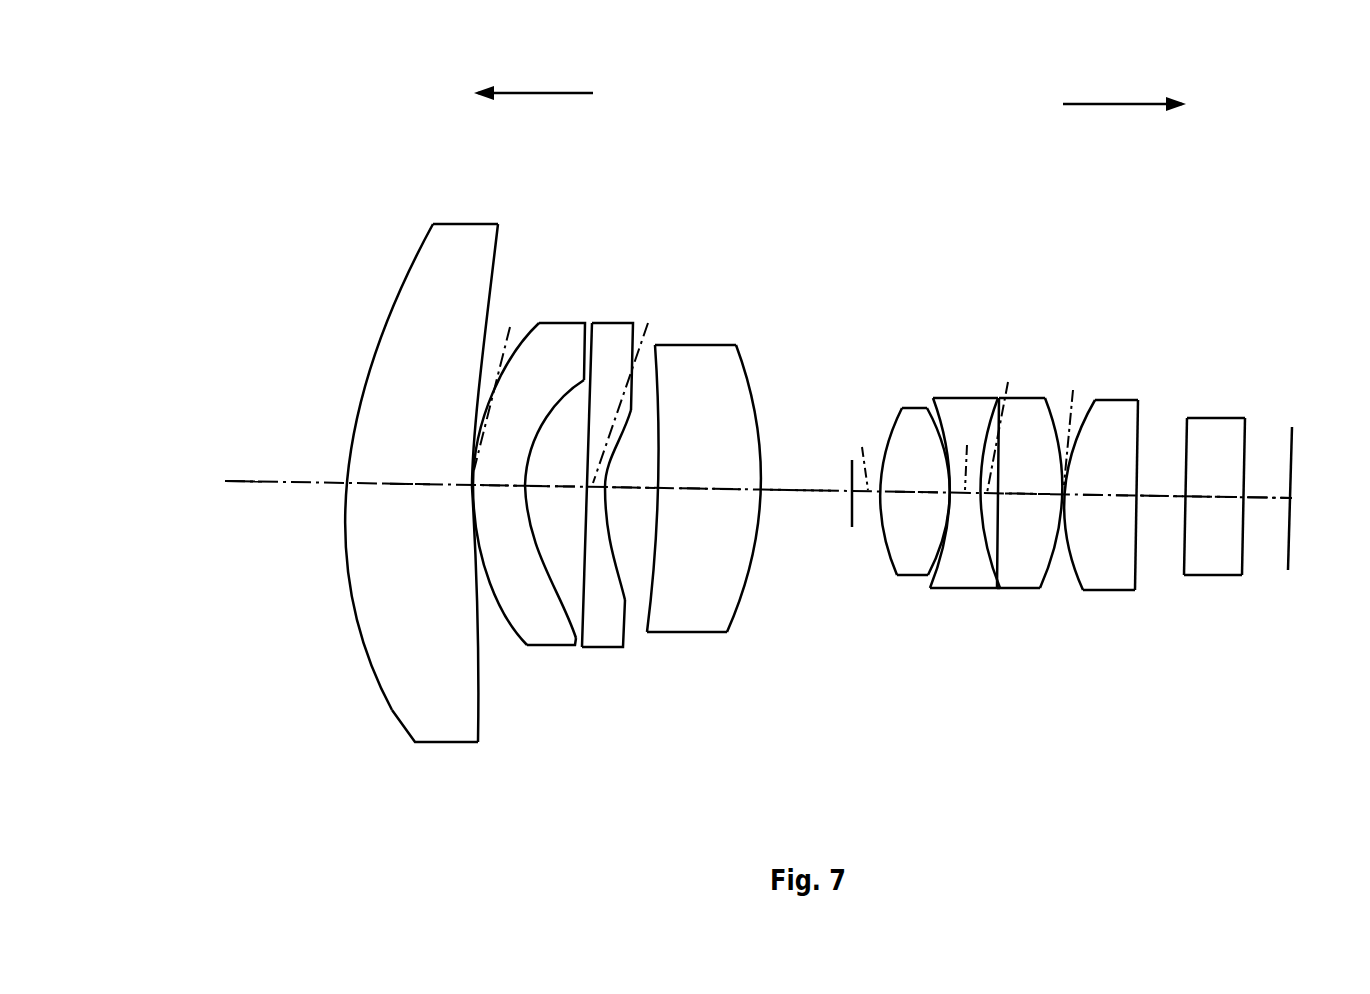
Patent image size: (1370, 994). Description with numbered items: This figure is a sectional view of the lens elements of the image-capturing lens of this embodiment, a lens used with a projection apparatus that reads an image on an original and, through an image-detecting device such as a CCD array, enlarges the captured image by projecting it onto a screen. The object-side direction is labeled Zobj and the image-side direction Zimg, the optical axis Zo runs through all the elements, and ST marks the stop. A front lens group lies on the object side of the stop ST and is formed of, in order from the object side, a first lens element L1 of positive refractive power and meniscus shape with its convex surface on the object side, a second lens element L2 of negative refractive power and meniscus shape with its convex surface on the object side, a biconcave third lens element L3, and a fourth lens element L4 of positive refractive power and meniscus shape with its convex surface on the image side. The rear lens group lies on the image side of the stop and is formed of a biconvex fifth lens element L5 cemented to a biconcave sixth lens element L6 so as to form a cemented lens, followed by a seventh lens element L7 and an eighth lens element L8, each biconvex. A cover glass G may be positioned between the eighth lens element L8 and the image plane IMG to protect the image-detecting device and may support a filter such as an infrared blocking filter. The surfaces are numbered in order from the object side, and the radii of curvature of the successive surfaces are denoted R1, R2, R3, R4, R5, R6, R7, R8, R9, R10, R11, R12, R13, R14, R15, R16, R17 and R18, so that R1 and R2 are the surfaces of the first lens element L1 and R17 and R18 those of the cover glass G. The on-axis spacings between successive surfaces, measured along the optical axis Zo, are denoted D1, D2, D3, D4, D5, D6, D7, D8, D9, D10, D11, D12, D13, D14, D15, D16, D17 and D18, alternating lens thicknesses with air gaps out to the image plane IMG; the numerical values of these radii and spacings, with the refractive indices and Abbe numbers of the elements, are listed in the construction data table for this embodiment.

The first lens element L1 is at (421, 479).
The second lens element L2 is at (529, 488).
The third lens element L3 is at (599, 503).
The fourth lens element L4 is at (696, 496).
The fifth lens element L5 is at (905, 501).
The sixth lens element L6 is at (980, 499).
The seventh lens element L7 is at (1031, 507).
The eighth lens element L8 is at (1113, 508).
The stop ST is at (834, 485).
The cover glass G is at (1220, 498).
The image plane IMG is at (1293, 440).
The object-side direction Zobj is at (545, 92).
The image-side direction Zimg is at (1113, 103).
The optical axis Zo is at (247, 483).
The radius of curvature of the first surface R1 is at (393, 708).
The radius of curvature of the second surface R2 is at (481, 690).
The radius of curvature of the third surface R3 is at (498, 610).
The radius of curvature of the fourth surface R4 is at (547, 527).
The radius of curvature of the fifth surface R5 is at (583, 558).
The radius of curvature of the sixth surface R6 is at (620, 560).
The radius of curvature of the seventh surface R7 is at (648, 613).
The radius of curvature of the eighth surface R8 is at (738, 606).
The radius of curvature of the ninth surface R9 is at (852, 520).
The radius of curvature of the tenth surface R10 is at (882, 552).
The radius of curvature of the eleventh surface R11 is at (940, 582).
The radius of curvature of the twelfth surface R12 is at (993, 492).
The radius of curvature of the thirteenth surface R13 is at (1002, 590).
The radius of curvature of the fourteenth surface R14 is at (1048, 584).
The radius of curvature of the fifteenth surface R15 is at (1077, 577).
The radius of curvature of the sixteenth surface R16 is at (1137, 585).
The radius of curvature of the seventeenth surface R17 is at (1187, 563).
The radius of curvature of the eighteenth surface R18 is at (1242, 563).
The on-axis spacing after the first surface D1 is at (407, 468).
The on-axis spacing after the second surface D2 is at (498, 381).
The on-axis spacing after the third surface D3 is at (501, 469).
The on-axis spacing after the fourth surface D4 is at (552, 469).
The on-axis spacing after the fifth surface D5 is at (628, 386).
The on-axis spacing after the sixth surface D6 is at (633, 472).
The on-axis spacing after the seventh surface D7 is at (712, 475).
The on-axis spacing after the eighth surface D8 is at (802, 475).
The on-axis spacing after the ninth surface D9 is at (867, 452).
The on-axis spacing after the tenth surface D10 is at (916, 477).
The on-axis spacing after the eleventh surface D11 is at (969, 451).
The on-axis spacing after the twelfth surface D12 is at (1008, 426).
The on-axis spacing after the thirteenth surface D13 is at (1027, 480).
The on-axis spacing after the fourteenth surface D14 is at (1076, 422).
The on-axis spacing after the fifteenth surface D15 is at (1105, 480).
The on-axis spacing after the sixteenth surface D16 is at (1161, 480).
The on-axis spacing after the seventeenth surface D17 is at (1214, 482).
The on-axis spacing after the eighteenth surface D18 is at (1270, 482).